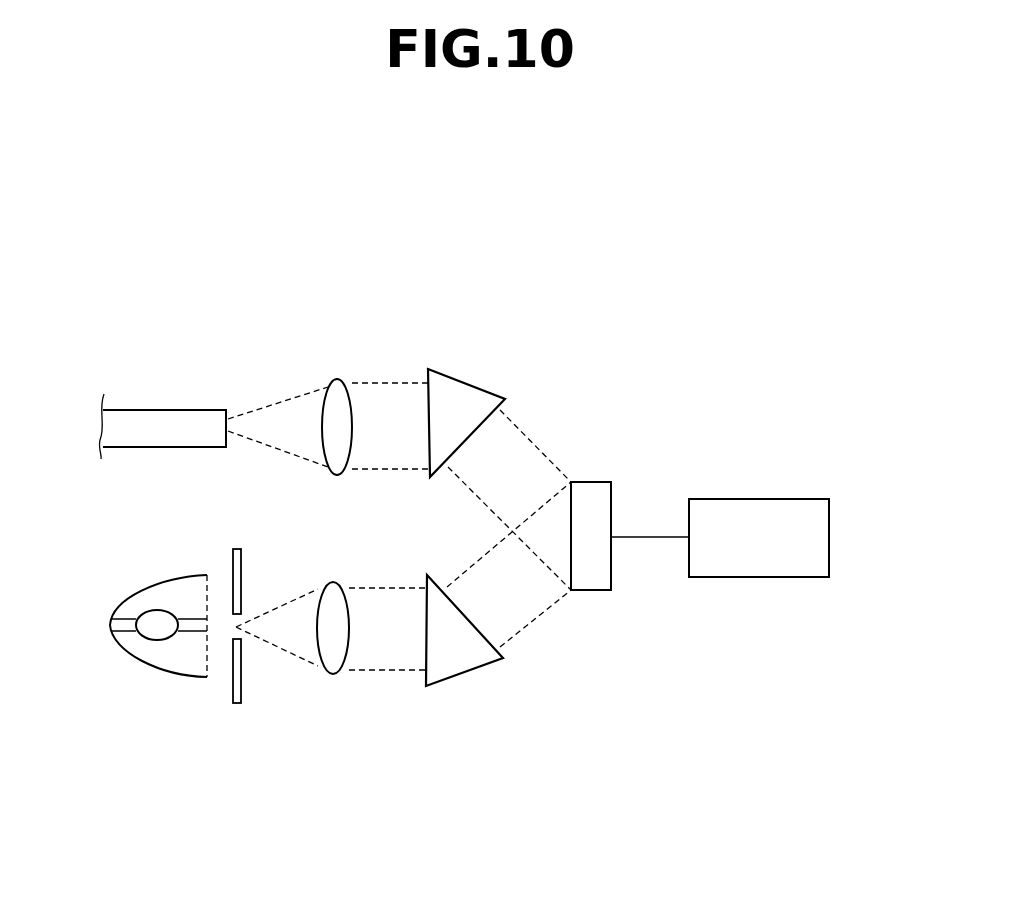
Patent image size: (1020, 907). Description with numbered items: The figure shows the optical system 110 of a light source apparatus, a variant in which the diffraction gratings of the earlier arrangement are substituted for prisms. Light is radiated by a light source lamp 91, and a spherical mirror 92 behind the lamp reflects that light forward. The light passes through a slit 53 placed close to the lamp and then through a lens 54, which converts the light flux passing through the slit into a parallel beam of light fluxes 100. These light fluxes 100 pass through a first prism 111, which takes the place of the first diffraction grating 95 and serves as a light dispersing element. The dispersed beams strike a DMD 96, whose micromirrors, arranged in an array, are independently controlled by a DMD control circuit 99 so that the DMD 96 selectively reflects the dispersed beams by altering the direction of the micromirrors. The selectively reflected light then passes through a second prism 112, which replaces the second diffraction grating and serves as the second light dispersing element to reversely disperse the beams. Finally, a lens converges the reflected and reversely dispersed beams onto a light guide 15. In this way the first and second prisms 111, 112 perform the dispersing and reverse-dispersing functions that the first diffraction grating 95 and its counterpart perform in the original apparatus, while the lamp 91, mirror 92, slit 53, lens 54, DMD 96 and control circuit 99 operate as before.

The optical system 110 is at (514, 257).
The light guide 15 is at (163, 410).
The first diffraction grating 95 is at (337, 379).
The second prism 112 is at (456, 379).
The DMD 96 is at (590, 482).
The DMD control circuit 99 is at (829, 537).
The light source lamp 91 is at (110, 625).
The spherical mirror 92 is at (177, 674).
The slit 53 is at (237, 704).
The light fluxes 100 is at (283, 648).
The lens 54 is at (333, 674).
The first prism 111 is at (464, 673).